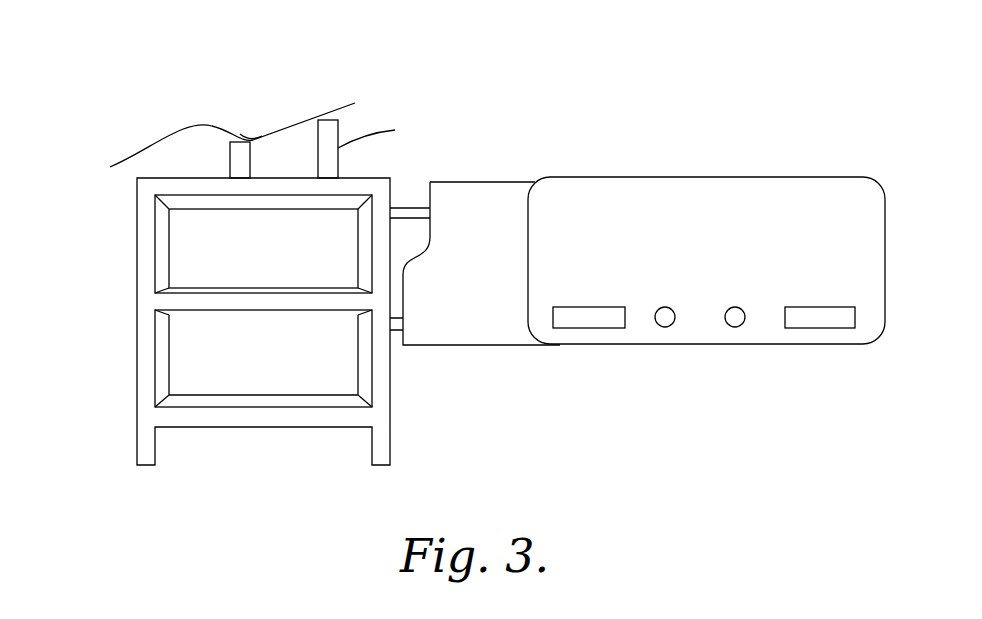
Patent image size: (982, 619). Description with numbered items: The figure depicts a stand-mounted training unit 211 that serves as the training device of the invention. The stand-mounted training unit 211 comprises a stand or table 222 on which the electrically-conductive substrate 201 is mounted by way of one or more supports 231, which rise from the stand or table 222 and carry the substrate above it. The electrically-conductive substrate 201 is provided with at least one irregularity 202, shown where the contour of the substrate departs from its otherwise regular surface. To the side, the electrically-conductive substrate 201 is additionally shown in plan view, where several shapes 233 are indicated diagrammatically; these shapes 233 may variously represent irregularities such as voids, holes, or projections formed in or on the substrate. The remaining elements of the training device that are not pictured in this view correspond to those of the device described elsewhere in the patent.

The electrically-conductive substrate 201 is at (172, 135).
The irregularity 202 is at (256, 120).
The stand-mounted training unit 211 is at (80, 106).
The stand or table 222 is at (152, 457).
The supports 231 is at (237, 156).
The shapes 233 is at (660, 337).